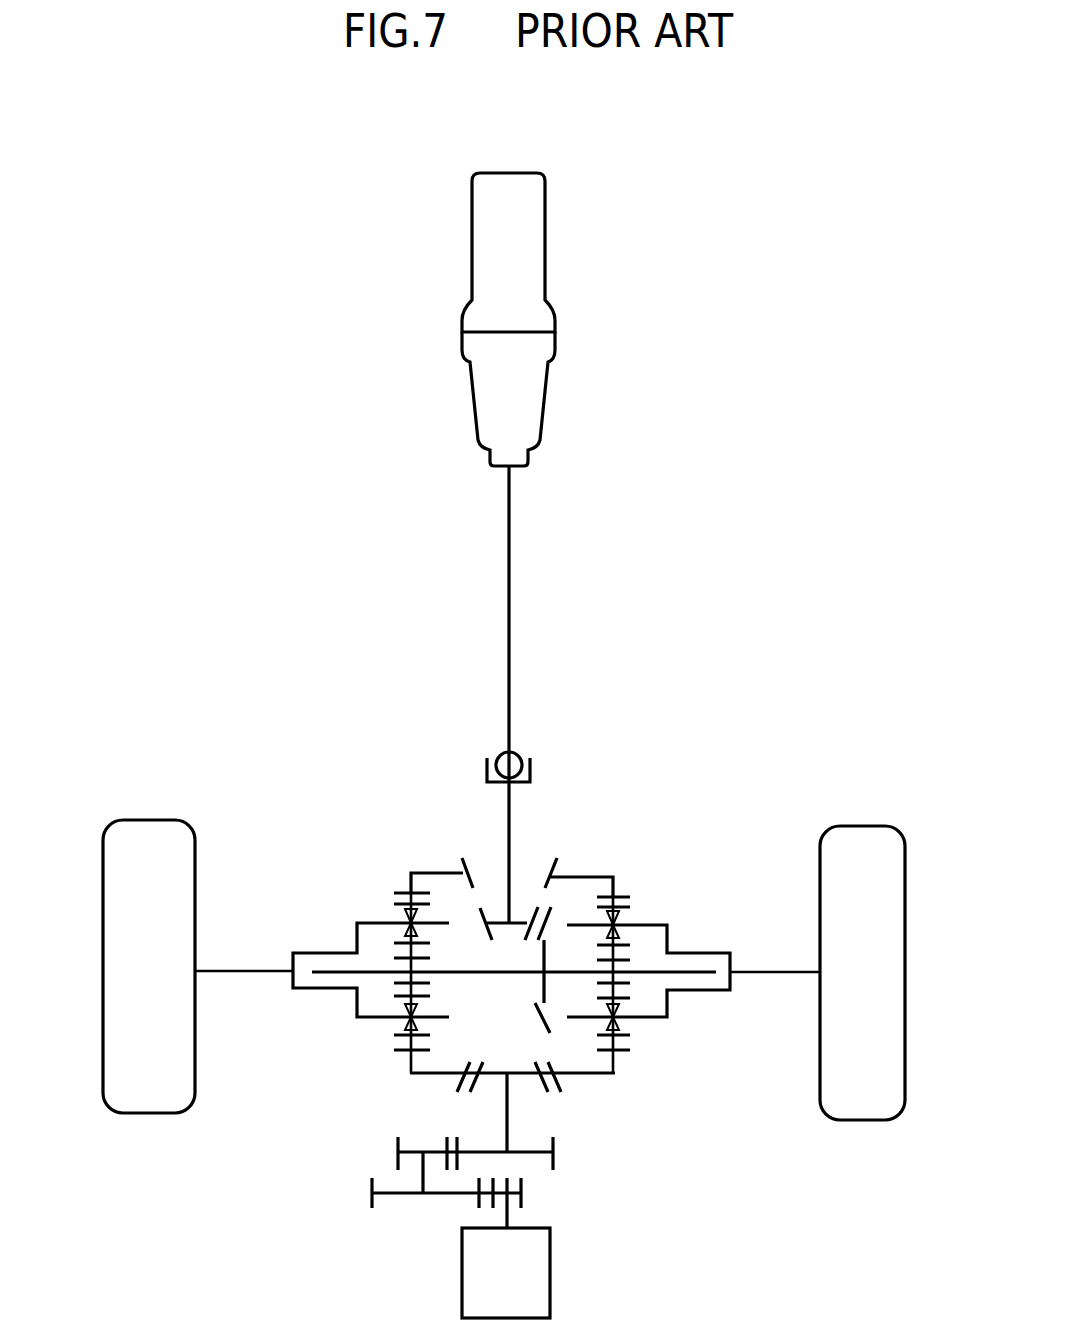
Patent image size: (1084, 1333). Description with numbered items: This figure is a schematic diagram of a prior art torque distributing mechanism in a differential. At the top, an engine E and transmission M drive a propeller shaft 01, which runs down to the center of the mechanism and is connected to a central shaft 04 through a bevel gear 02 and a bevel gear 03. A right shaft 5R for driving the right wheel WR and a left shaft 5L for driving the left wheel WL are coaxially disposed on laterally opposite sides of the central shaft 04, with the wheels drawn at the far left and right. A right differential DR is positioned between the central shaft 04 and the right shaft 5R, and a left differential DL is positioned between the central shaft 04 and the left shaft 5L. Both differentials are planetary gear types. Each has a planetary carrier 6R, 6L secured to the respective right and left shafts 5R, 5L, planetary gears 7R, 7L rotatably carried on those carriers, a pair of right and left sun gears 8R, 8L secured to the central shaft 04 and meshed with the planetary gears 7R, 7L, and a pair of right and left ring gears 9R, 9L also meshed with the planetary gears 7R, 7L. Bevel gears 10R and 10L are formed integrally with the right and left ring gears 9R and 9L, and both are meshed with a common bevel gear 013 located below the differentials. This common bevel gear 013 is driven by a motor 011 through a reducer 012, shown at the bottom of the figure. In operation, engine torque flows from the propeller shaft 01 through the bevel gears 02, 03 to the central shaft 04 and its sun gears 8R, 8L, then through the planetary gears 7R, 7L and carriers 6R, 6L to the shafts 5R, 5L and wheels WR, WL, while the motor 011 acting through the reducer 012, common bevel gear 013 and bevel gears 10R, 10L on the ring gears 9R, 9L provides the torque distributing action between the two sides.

The engine E is at (543, 231).
The transmission M is at (530, 422).
The propeller shaft 01 is at (510, 816).
The bevel gear 02 is at (496, 940).
The bevel gear 03 is at (537, 1010).
The central shaft 04 is at (511, 975).
The left shaft 5L is at (236, 970).
The right shaft 5R is at (774, 971).
The planetary carrier 6L is at (356, 944).
The planetary carrier 6R is at (668, 938).
The planetary gears 7L is at (344, 1060).
The planetary gears 7R is at (632, 907).
The left sun gear 8L is at (400, 985).
The right sun gear 8R is at (632, 988).
The left ring gear 9L is at (402, 873).
The right ring gear 9R is at (626, 895).
The bevel gear 10L is at (463, 1085).
The bevel gear 10R is at (553, 1083).
The motor 011 is at (540, 1250).
The reducer 012 is at (556, 1175).
The common bevel gear 013 is at (547, 1086).
The left differential DL is at (386, 871).
The right differential DR is at (648, 887).
The left wheel WL is at (150, 823).
The right wheel WR is at (858, 829).